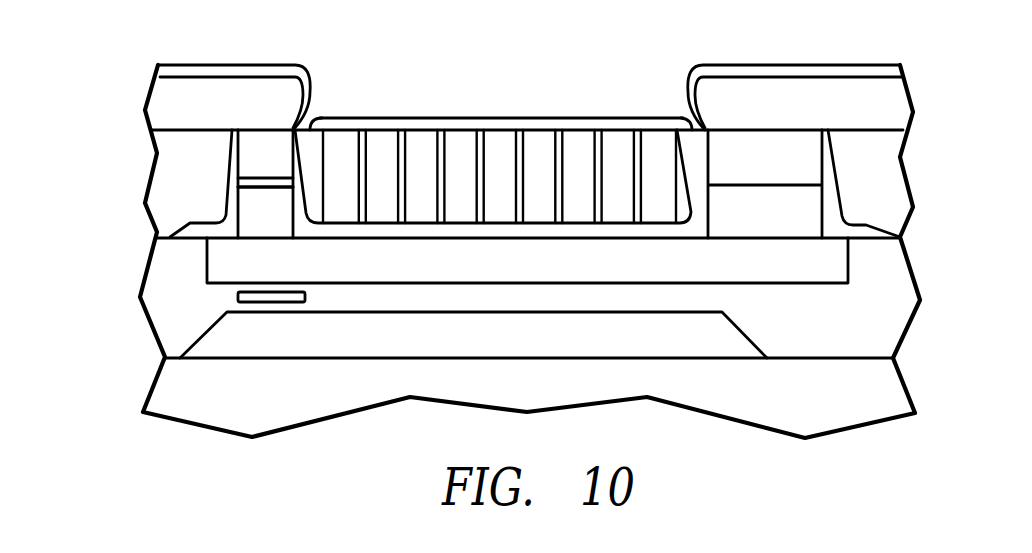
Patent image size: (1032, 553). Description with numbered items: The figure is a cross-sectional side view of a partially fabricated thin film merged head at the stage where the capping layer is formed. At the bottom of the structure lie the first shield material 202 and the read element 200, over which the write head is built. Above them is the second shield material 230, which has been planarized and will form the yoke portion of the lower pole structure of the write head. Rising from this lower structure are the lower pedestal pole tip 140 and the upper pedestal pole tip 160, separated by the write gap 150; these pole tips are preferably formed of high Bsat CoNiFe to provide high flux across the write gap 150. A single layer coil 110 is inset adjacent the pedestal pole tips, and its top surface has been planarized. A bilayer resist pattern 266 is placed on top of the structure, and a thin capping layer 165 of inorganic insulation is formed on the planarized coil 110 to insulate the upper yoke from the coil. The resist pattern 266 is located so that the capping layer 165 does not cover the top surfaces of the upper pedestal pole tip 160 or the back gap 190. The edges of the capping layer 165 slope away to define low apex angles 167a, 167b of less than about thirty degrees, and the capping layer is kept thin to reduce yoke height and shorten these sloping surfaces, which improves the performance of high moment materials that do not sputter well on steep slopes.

The coil 110 is at (418, 150).
The lower pedestal pole tip 140 is at (257, 220).
The write gap 150 is at (265, 183).
The upper pedestal pole tip 160 is at (250, 140).
The capping layer 165 is at (571, 125).
The apex angle 167a is at (312, 126).
The apex angle 167b is at (682, 123).
The back gap 190 is at (775, 157).
The read element 200 is at (296, 300).
The first shield material 202 is at (371, 334).
The second shield material 230 is at (242, 267).
The bilayer resist pattern 266 is at (177, 104).